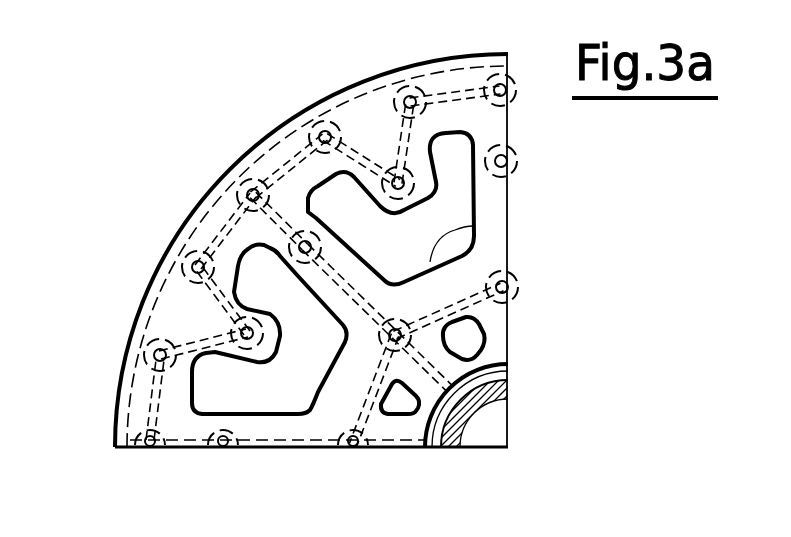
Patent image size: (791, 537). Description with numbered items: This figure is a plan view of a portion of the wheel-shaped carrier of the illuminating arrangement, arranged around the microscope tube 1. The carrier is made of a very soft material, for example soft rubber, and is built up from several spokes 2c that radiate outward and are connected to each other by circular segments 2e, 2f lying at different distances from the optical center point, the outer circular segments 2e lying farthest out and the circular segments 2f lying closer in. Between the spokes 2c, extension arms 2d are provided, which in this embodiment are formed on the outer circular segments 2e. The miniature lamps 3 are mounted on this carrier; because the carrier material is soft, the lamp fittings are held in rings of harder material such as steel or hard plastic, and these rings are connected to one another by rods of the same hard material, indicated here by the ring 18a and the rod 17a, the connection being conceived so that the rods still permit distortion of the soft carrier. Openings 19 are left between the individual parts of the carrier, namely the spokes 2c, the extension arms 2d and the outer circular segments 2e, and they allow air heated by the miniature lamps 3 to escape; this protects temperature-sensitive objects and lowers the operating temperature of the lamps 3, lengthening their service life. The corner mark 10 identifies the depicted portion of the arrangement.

The microscope tube 1 is at (502, 387).
The spokes 2c is at (471, 157).
The extension arms 2d is at (268, 336).
The outer circular segments 2e is at (117, 405).
The circular segments 2f is at (470, 228).
The miniature lamps 3 is at (150, 450).
The plate 10 is at (497, 447).
The rim channel 17a is at (212, 224).
The bolt hole 18a is at (182, 268).
The openings 19 is at (287, 218).